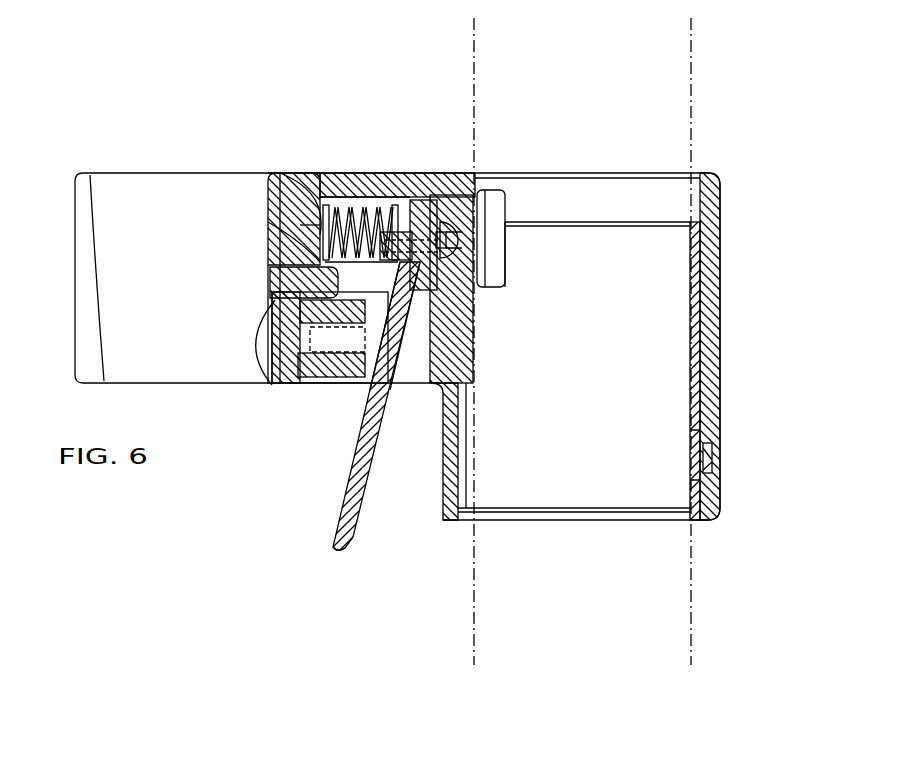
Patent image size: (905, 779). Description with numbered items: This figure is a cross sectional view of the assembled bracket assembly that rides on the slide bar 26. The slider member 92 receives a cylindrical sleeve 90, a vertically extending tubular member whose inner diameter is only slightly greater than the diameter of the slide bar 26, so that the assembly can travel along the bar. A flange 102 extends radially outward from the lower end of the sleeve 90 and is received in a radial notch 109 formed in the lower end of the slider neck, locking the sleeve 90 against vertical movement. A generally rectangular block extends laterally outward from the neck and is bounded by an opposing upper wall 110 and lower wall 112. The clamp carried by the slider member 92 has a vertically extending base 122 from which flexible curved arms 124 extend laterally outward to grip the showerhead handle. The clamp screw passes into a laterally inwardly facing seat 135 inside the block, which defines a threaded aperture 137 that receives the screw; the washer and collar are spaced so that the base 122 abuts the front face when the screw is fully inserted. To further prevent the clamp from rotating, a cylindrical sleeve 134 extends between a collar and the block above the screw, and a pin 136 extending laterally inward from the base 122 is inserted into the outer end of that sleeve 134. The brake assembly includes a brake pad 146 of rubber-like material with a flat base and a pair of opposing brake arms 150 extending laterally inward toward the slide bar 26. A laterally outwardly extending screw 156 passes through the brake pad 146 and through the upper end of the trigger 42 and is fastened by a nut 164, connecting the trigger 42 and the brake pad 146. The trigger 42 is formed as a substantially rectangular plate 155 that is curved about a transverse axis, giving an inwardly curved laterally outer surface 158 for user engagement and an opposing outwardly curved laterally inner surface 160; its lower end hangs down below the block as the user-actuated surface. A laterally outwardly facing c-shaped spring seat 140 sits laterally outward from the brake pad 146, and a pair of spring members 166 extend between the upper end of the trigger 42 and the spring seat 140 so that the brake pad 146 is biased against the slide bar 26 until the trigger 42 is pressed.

The slide bar 26 is at (692, 93).
The trigger 42 is at (372, 527).
The cylindrical sleeve 90 is at (710, 288).
The slider member 92 is at (727, 220).
The flange 102 is at (717, 457).
The radial notch 109 is at (710, 468).
The upper wall 110 is at (372, 190).
The lower wall 112 is at (330, 382).
The base 122 is at (328, 185).
The curved arms 124 is at (183, 276).
The cylindrical sleeve 134 is at (300, 228).
The seat 135 is at (360, 368).
The pin 136 is at (300, 262).
The threaded aperture 137 is at (372, 350).
The spring seat 140 is at (287, 200).
The brake pad 146 is at (447, 187).
The brake arms 150 is at (490, 208).
The rectangular plate 155 is at (327, 542).
The screw 156 is at (477, 243).
The laterally outer surface 158 is at (370, 457).
The laterally inner surface 160 is at (403, 447).
The nut 164 is at (412, 200).
The spring members 166 is at (352, 205).